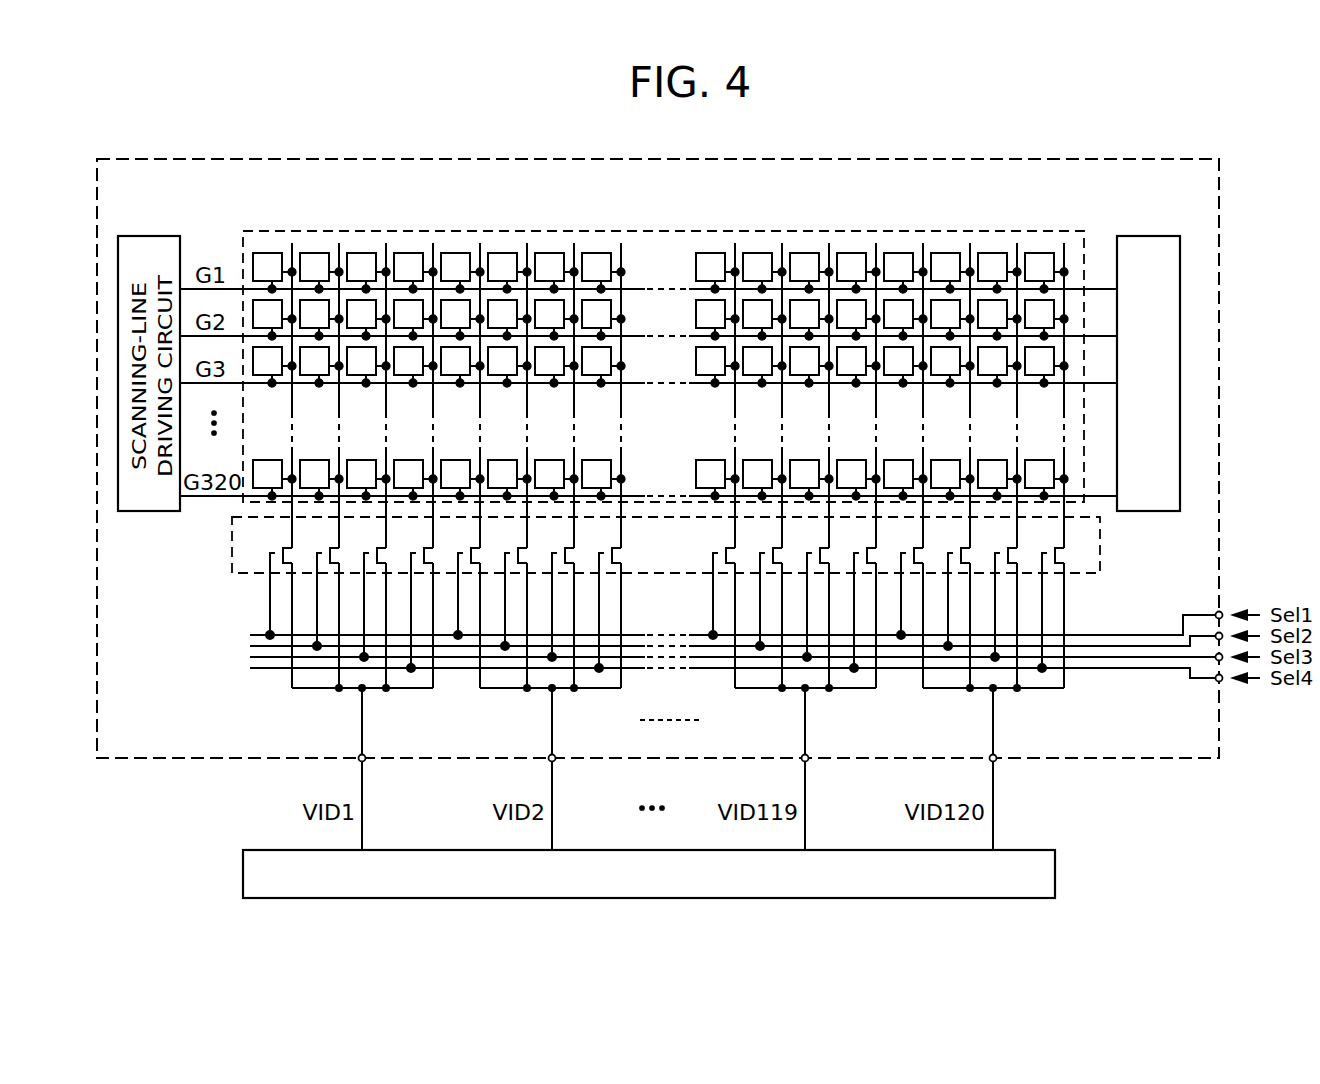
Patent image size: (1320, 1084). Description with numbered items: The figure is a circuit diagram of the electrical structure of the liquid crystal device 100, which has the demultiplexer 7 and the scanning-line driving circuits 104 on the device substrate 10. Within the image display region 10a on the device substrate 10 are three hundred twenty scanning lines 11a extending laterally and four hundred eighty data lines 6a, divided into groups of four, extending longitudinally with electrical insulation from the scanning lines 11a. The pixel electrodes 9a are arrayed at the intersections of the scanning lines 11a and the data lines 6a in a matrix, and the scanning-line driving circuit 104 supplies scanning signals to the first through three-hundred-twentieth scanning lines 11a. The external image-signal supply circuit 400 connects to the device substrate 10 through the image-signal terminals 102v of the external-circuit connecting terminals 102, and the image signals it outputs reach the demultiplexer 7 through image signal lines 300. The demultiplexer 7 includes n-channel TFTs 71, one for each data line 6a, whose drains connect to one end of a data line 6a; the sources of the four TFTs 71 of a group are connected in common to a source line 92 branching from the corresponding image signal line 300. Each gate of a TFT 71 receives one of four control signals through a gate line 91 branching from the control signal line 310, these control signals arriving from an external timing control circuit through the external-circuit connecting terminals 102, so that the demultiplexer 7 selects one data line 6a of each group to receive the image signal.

The liquid crystal device 100 is at (1195, 116).
The device substrate 10 is at (1221, 352).
The image display region 10a is at (1067, 229).
The scanning-line driving circuit 104 is at (1157, 236).
The pixel electrode 9a is at (263, 265).
The data line 6a is at (621, 455).
The scanning line 11a is at (202, 497).
The demultiplexer 7 is at (232, 563).
The TFT 71 is at (270, 553).
The gate line 91 is at (268, 610).
The source line 92 is at (290, 684).
The control signal line 310 is at (1124, 633).
The external-circuit connecting terminal 102 is at (1224, 684).
The image-signal terminal 102v is at (810, 755).
The image signal line 300 is at (552, 742).
The image-signal supply circuit 400 is at (1056, 874).